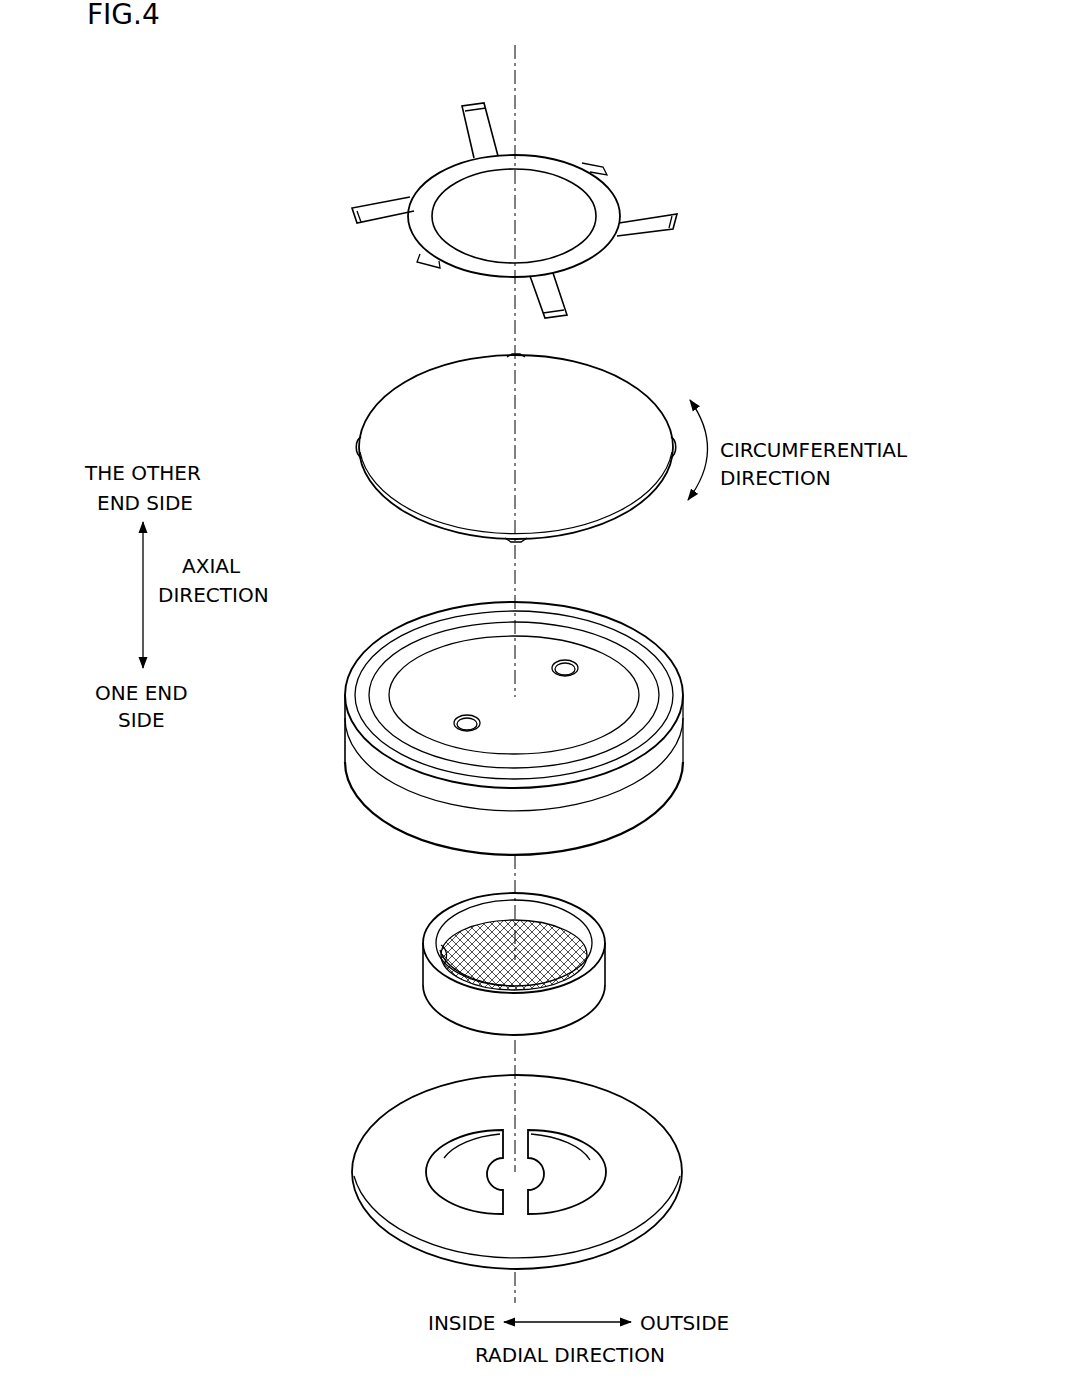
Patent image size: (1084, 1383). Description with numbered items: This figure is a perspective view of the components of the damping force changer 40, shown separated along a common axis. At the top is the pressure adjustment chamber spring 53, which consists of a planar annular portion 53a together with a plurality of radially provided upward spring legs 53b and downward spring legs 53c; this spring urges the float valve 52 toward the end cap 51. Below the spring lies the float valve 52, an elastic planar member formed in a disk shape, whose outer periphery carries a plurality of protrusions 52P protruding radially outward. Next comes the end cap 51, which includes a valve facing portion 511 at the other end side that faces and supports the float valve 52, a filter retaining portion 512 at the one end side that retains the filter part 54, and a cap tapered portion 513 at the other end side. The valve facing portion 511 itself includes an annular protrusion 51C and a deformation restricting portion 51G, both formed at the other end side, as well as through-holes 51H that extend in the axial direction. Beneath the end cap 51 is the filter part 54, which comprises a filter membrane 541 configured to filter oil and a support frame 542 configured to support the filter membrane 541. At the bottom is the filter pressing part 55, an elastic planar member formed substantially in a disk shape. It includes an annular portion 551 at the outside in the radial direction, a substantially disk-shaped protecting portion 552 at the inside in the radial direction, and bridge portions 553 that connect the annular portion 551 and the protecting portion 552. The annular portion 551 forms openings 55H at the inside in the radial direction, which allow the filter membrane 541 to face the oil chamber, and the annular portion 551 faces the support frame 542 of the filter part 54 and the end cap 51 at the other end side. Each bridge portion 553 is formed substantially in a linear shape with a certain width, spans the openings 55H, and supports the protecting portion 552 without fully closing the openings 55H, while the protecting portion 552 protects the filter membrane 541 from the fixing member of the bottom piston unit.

The damping force changer 40 is at (780, 80).
The pressure adjustment chamber spring 53 is at (516, 203).
The planar annular portion 53a is at (553, 165).
The upward spring legs 53b is at (672, 213).
The downward spring legs 53c is at (553, 325).
The float valve 52 is at (458, 413).
The protrusions 52P is at (358, 445).
The end cap 51 is at (516, 693).
The valve facing portion 511 is at (643, 638).
The deformation restricting portion 51G is at (602, 680).
The annular protrusion 51C is at (665, 712).
The cap tapered portion 513 is at (363, 743).
The filter retaining portion 512 is at (600, 843).
The through-holes 51H is at (467, 718).
The filter part 54 is at (497, 951).
The filter membrane 541 is at (555, 940).
The support frame 542 is at (595, 988).
The filter pressing part 55 is at (512, 1146).
The annular portion 551 is at (413, 1220).
The protecting portion 552 is at (487, 1168).
The bridge portions 553 is at (520, 1200).
The openings 55H is at (512, 1171).